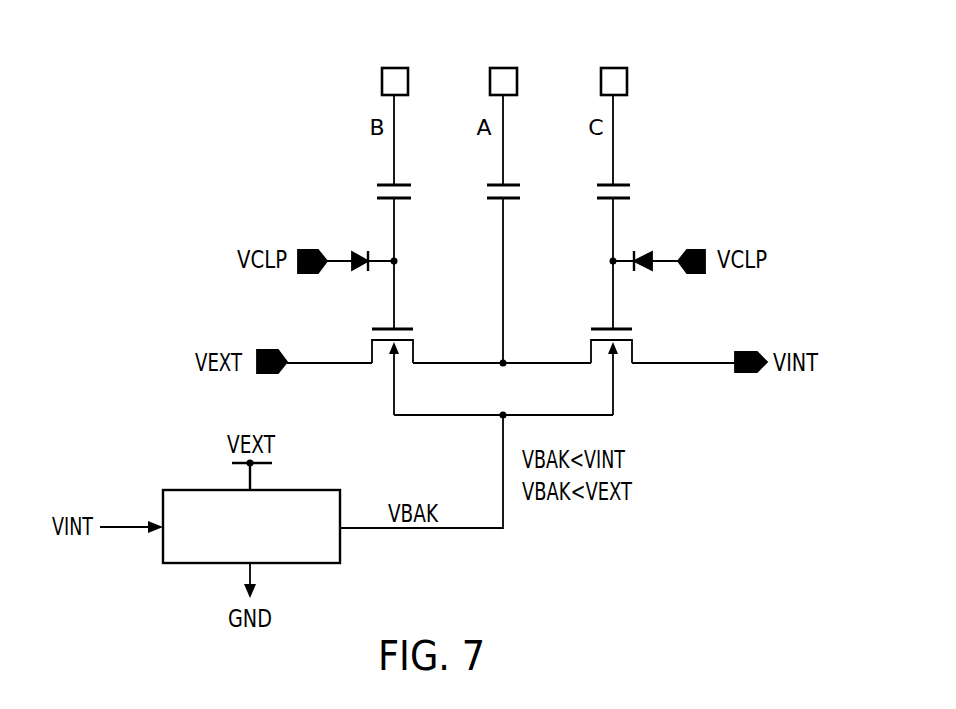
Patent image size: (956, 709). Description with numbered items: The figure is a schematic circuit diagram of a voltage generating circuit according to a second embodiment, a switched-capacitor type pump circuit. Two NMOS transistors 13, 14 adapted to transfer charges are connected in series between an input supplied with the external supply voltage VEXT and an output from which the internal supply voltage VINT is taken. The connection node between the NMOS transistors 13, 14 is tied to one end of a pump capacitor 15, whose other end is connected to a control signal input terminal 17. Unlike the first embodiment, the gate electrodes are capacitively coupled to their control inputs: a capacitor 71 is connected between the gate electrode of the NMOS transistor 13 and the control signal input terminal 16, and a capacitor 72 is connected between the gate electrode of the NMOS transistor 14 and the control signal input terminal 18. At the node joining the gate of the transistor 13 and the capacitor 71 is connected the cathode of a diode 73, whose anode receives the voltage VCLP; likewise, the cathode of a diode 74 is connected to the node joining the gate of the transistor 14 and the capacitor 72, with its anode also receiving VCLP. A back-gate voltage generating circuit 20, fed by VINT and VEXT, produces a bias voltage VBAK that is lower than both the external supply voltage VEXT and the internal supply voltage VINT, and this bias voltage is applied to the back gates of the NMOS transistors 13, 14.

The control signal input terminal 16 is at (394, 66).
The control signal input terminal 17 is at (503, 66).
The control signal input terminal 18 is at (613, 66).
The capacitor 71 is at (398, 185).
The pump capacitor 15 is at (507, 185).
The capacitor 72 is at (619, 185).
The diode 73 is at (358, 247).
The diode 74 is at (644, 248).
The NMOS transistor 13 is at (402, 328).
The NMOS transistor 14 is at (600, 328).
The back-gate voltage generating circuit 20 is at (325, 488).